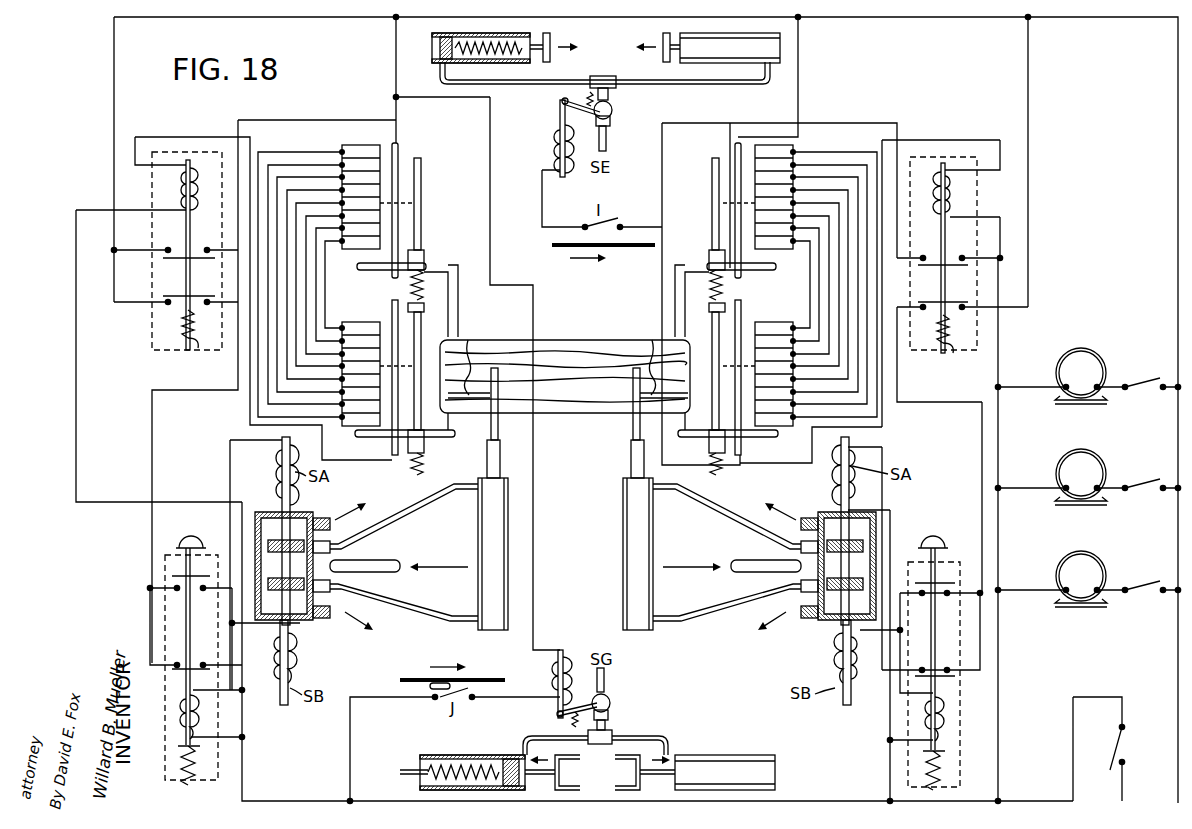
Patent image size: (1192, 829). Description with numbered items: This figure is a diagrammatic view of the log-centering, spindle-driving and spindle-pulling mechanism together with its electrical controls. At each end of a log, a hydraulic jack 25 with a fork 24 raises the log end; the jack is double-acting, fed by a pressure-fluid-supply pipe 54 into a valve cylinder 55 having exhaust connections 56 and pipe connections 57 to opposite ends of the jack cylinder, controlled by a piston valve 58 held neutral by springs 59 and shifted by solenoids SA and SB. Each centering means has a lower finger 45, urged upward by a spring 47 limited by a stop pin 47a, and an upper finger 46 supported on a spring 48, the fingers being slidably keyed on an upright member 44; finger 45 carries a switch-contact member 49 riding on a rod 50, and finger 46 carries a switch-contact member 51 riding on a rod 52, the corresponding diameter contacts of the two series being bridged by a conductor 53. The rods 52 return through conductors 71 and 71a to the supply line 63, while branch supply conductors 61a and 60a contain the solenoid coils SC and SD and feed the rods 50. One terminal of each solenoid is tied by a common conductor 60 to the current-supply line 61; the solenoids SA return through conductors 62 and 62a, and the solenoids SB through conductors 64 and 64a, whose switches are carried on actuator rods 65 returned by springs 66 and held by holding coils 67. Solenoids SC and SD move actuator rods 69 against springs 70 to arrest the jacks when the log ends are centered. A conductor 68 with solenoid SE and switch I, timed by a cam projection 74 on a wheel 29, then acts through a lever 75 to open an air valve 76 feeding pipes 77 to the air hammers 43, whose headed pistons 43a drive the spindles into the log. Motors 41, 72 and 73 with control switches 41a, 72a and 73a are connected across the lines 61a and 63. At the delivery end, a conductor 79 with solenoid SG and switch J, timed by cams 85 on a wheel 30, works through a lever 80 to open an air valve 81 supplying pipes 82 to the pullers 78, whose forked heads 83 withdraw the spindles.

The supply line 63 is at (114, 17).
The conductor 62a is at (114, 110).
The branch supply conductor 60a is at (76, 395).
The conductor 68 is at (312, 122).
The conductor 71 is at (798, 78).
The conductor 71a is at (430, 46).
The air hammer 43 is at (438, 58).
The headed piston 43a is at (660, 37).
The pipe 77 is at (535, 78).
The air valve 76 is at (610, 115).
The lever 75 is at (562, 102).
The cam projection 74 is at (560, 243).
The wheel 29 is at (652, 250).
The conductor 79 is at (533, 498).
The conductor 53 is at (312, 304).
The rod 52 is at (400, 158).
The rod 50 is at (392, 311).
The electrode holder rod 44 is at (422, 181).
The flexible-spring switch-contact member 51 is at (385, 262).
The spring 48 is at (722, 290).
The spring 47 is at (424, 462).
The flexible-spring switch-contact member 49 is at (378, 445).
The finger 45 is at (455, 437).
The finger 46 is at (458, 307).
The stop pin 47a is at (468, 348).
The fork 24 is at (498, 428).
The hydraulic jack 25 is at (478, 551).
The pipe connection 57 is at (442, 535).
The pressure-fluid-supply pipe 54 is at (392, 560).
The valve cylinder 55 is at (302, 622).
The piston valve 58 is at (563, 565).
The exhaust or return-pipe connection 56 is at (322, 518).
The spring 59 is at (333, 548).
The actuator rod 69 is at (182, 284).
The spring 70 is at (182, 330).
The actuator rod 65 is at (176, 550).
The conductor 64a is at (238, 658).
The conductor 64 is at (900, 700).
The holding coil 67 is at (200, 726).
The spring 66 is at (200, 772).
The common conductor 60 is at (242, 775).
The current-supply line 61 is at (1102, 697).
The conductor 62 is at (982, 492).
The branch supply conductor 61a is at (990, 140).
The motor 41 is at (1086, 360).
The control switch 41a is at (1150, 376).
The motor 72 is at (1088, 462).
The control switch 72a is at (1150, 480).
The motor 73 is at (1088, 564).
The control switch 73a is at (1150, 575).
The cam 85 is at (470, 690).
The wheel 30 is at (432, 685).
The air valve 81 is at (610, 705).
The lever 80 is at (557, 712).
The pipe 82 is at (522, 740).
The air operated puller 78 is at (425, 760).
The forked head 83 is at (606, 778).